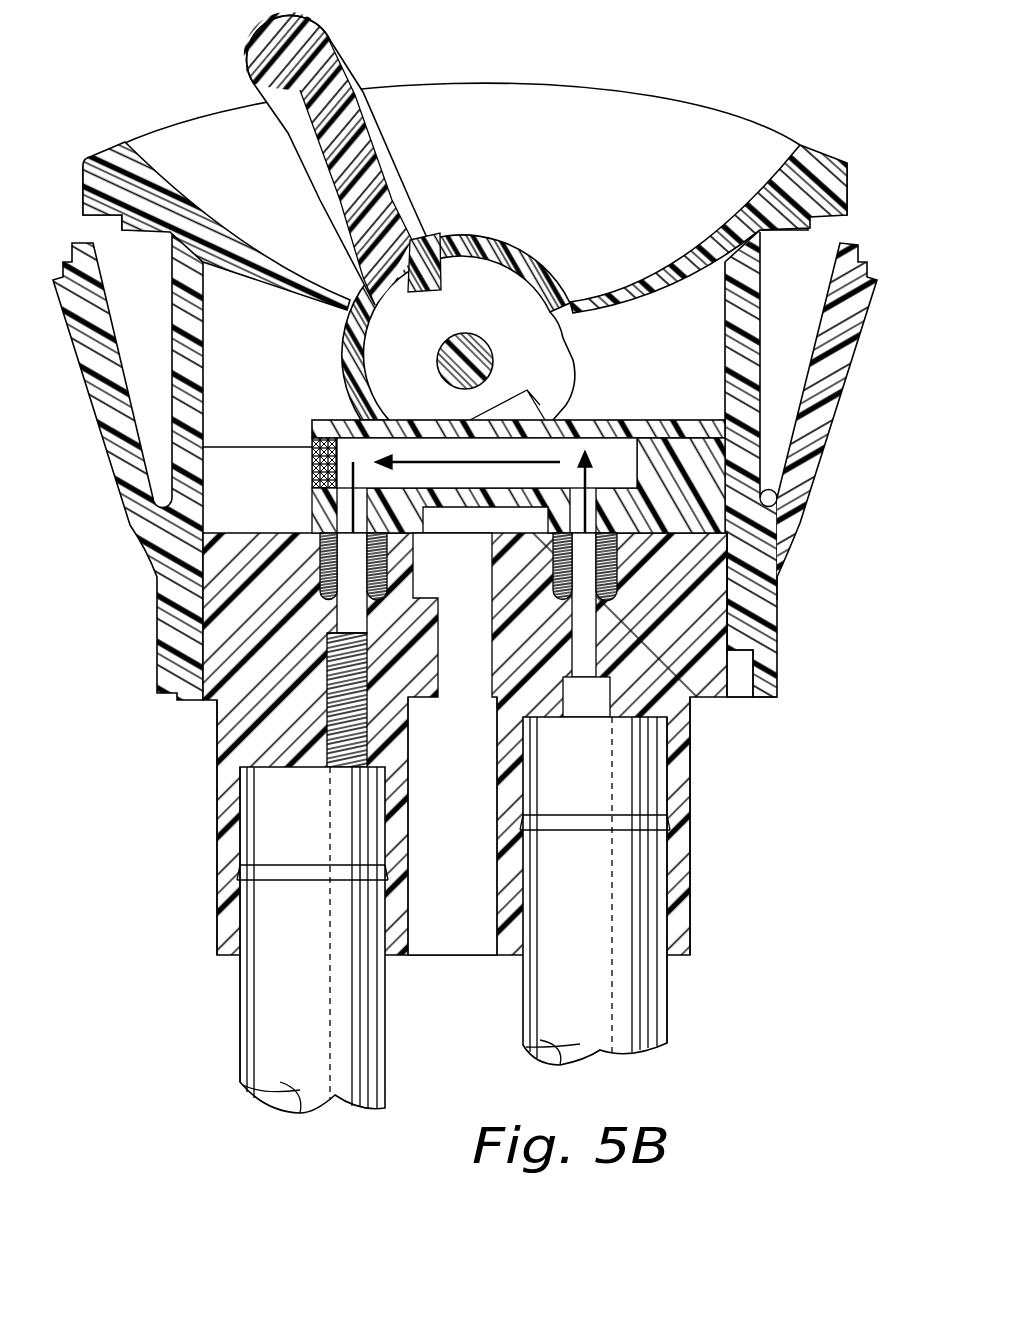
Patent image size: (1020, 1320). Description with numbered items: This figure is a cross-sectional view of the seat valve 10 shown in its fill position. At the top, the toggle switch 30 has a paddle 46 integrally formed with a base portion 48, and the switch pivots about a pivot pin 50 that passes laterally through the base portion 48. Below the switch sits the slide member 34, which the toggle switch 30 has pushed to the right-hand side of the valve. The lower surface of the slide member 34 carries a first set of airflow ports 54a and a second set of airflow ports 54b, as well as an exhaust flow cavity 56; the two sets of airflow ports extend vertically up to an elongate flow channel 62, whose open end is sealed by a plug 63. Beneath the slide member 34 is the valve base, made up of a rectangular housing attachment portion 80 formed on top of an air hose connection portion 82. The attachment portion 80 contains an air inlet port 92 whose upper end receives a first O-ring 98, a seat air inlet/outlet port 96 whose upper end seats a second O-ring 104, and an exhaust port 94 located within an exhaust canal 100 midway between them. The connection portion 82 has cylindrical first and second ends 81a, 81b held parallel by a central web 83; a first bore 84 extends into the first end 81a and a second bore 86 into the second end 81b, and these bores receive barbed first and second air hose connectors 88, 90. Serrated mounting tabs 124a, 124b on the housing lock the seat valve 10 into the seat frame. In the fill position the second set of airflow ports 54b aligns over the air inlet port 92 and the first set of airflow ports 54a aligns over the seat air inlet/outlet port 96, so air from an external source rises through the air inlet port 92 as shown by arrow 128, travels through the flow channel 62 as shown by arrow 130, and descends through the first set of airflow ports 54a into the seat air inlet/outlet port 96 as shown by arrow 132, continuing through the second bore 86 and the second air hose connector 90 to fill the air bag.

The seat valve 10 is at (472, 556).
The toggle switch 30 is at (260, 30).
The paddle 46 is at (318, 36).
The base portion 48 is at (533, 247).
The pivot pin 50 is at (482, 338).
The arrow 130 is at (572, 350).
The exhaust flow cavity 56 is at (591, 488).
The second set of airflow ports 54b is at (628, 440).
The flow channel 62 is at (612, 470).
The slide member 34 is at (333, 420).
The first set of airflow ports 54a is at (312, 437).
The mounting tab 124a is at (100, 386).
The mounting tab 124b is at (838, 380).
The plug 63 is at (312, 476).
The arrow 132 is at (327, 536).
The arrow 128 is at (775, 522).
The first O-ring 98 is at (758, 585).
The air inlet port 92 is at (493, 655).
The second O-ring 104 is at (327, 560).
The seat air inlet/outlet port 96 is at (325, 622).
The exhaust port 94 is at (745, 656).
The housing attachment portion 80 is at (188, 703).
The first bore 84 is at (667, 750).
The second bore 86 is at (240, 800).
The air hose connection portion 82 is at (695, 797).
The first end 81a is at (217, 883).
The second end 81b is at (693, 877).
The second air hose connector 90 is at (240, 998).
The web 83 is at (428, 957).
The exhaust canal 100 is at (425, 700).
The first air hose connector 88 is at (667, 990).